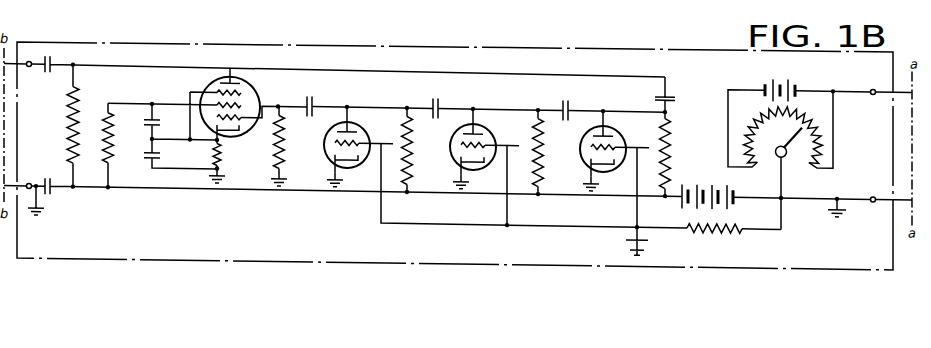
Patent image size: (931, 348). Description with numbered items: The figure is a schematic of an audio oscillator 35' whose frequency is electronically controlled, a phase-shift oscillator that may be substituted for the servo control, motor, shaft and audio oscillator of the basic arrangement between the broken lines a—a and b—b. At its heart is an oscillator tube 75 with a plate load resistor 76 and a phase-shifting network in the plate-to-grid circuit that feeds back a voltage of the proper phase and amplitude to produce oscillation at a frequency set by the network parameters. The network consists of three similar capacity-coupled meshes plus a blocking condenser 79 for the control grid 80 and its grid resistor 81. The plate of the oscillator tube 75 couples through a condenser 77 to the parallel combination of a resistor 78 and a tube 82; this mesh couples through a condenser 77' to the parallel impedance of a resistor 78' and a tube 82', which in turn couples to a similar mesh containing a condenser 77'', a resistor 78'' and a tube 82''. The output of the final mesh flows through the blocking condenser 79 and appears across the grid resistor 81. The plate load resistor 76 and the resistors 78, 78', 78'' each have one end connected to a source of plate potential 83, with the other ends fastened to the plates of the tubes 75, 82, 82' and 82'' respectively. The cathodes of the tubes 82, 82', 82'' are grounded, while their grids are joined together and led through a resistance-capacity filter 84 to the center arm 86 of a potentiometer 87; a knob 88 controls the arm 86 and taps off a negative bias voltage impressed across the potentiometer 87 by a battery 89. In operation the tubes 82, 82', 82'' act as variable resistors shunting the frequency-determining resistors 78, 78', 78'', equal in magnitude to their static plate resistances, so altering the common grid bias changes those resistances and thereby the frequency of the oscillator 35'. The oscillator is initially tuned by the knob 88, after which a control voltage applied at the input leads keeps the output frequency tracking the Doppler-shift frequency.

The audio oscillator 35' is at (455, 146).
The oscillator tube 75 is at (207, 88).
The plate load resistor 76 is at (78, 112).
The condenser 77 is at (675, 96).
The condenser 77' is at (552, 106).
The condenser 77'' is at (450, 104).
The resistor 78 is at (678, 154).
The resistor 78' is at (550, 152).
The resistor 78'' is at (420, 150).
The blocking condenser 79 is at (313, 100).
The control grid 80 is at (286, 99).
The grid resistor 81 is at (277, 134).
The tube 82 is at (614, 151).
The tube 82' is at (484, 149).
The tube 82'' is at (358, 147).
The source of plate potential 83 is at (729, 177).
The resistance-capacity filter 84 is at (631, 226).
The center arm 86 is at (791, 121).
The potentiometer 87 is at (763, 105).
The knob 88 is at (784, 145).
The battery 89 is at (763, 71).